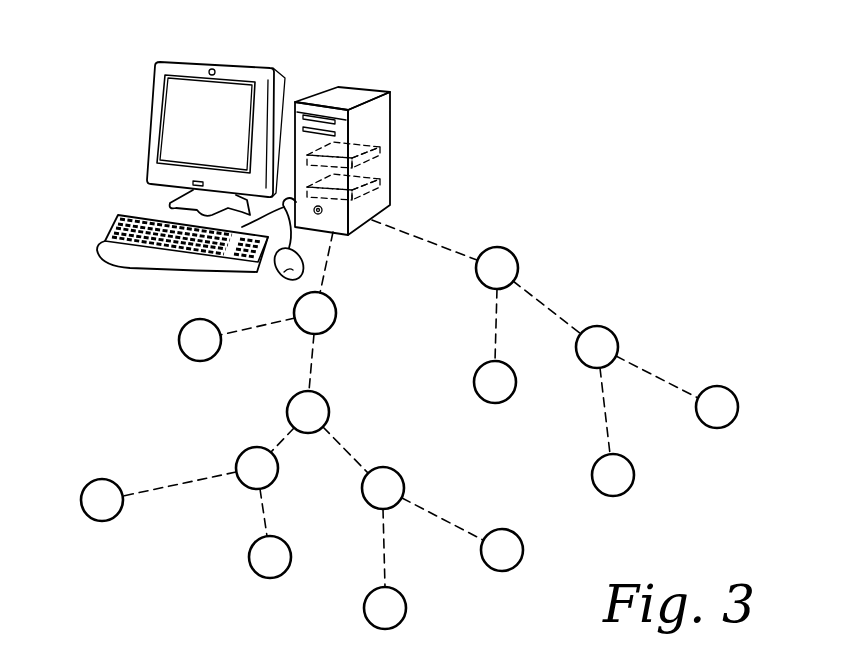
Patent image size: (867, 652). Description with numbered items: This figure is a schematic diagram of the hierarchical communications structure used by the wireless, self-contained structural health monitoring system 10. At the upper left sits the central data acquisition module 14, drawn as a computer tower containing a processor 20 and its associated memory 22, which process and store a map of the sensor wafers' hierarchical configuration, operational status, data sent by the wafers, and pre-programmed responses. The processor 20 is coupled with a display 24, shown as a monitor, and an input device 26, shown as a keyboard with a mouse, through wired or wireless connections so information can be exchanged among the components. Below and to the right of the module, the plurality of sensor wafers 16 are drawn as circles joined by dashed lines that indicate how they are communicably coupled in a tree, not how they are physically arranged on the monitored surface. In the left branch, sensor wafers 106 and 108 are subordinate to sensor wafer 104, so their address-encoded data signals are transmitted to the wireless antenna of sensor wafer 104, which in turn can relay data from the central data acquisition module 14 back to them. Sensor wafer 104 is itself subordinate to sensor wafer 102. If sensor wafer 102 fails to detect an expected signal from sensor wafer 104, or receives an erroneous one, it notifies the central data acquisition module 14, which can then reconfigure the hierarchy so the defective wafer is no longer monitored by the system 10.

The structural health monitoring system 10 is at (677, 115).
The central data acquisition module 14 is at (387, 107).
The sensor wafers 16 is at (677, 285).
The processor 20 is at (380, 147).
The memory 22 is at (368, 192).
The display 24 is at (157, 94).
The input device 26 is at (118, 216).
The sensor wafer 102 is at (314, 410).
The sensor wafer 104 is at (253, 447).
The sensor wafer 106 is at (90, 508).
The sensor wafer 108 is at (270, 572).